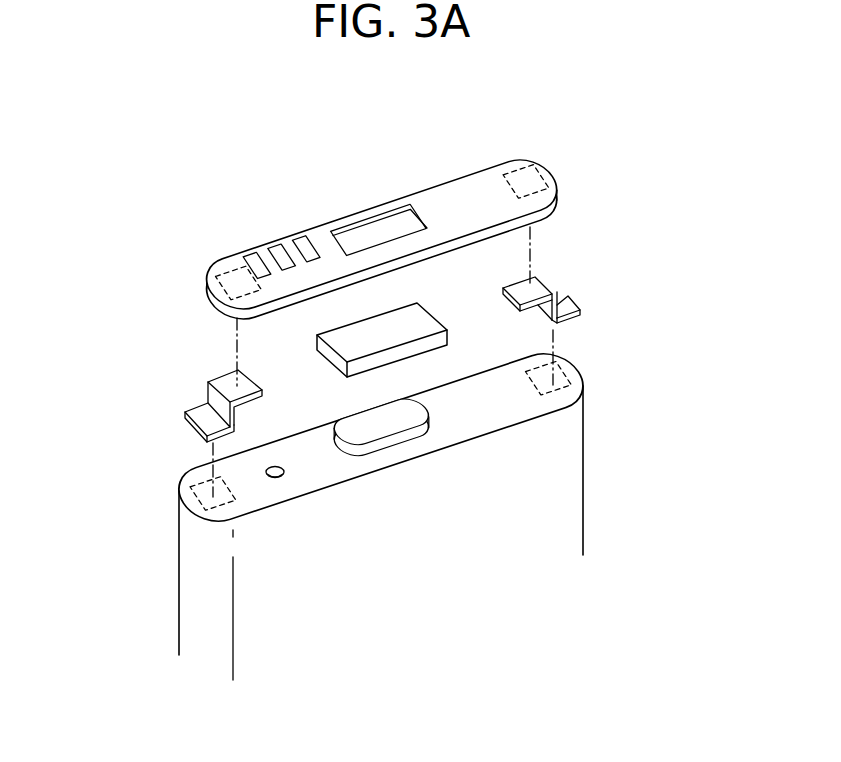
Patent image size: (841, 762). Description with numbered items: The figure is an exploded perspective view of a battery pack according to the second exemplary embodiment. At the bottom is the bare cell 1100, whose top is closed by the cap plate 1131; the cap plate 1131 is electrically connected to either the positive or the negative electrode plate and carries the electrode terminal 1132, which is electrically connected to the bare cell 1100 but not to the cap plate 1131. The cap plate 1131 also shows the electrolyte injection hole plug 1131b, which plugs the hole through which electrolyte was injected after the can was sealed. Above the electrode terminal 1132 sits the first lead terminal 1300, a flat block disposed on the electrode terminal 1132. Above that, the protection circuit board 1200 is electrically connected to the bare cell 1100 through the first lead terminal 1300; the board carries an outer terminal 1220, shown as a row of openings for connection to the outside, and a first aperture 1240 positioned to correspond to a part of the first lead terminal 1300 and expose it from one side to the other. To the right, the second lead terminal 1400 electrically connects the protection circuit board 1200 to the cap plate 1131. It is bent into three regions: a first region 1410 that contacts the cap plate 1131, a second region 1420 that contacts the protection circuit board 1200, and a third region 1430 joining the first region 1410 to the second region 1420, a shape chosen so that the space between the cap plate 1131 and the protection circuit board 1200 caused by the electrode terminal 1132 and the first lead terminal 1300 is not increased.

The bare cell 1100 is at (172, 526).
The cap plate 1131 is at (507, 421).
The electrolyte injection hole plug 1131b is at (283, 474).
The electrode terminal 1132 is at (387, 428).
The protection circuit board 1200 is at (200, 262).
The outer terminal 1220 is at (308, 247).
The first aperture 1240 is at (370, 214).
The first lead terminal 1300 is at (448, 303).
The second lead terminal 1400 is at (699, 245).
The first region 1410 is at (570, 315).
The second region 1420 is at (558, 300).
The third region 1430 is at (535, 282).